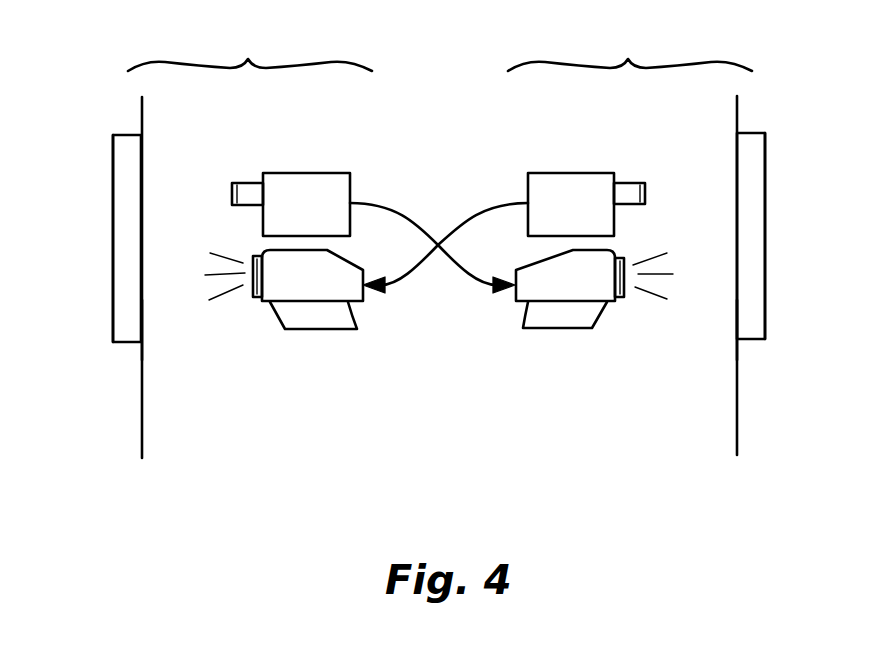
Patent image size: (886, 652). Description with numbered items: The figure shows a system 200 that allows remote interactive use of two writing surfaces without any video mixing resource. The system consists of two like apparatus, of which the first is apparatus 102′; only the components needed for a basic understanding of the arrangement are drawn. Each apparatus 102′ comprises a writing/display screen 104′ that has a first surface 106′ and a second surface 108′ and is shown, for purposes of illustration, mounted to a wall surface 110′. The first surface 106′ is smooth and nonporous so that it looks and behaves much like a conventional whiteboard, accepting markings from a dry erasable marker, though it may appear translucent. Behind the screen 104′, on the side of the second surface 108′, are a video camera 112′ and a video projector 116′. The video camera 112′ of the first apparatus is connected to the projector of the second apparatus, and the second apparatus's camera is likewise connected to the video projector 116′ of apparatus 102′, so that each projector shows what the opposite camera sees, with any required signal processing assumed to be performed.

The apparatus 102′ is at (250, 49).
The writing/display screen 104′ is at (126, 134).
The first surface 106′ is at (113, 275).
The second surface 108′ is at (143, 312).
The wall surface 110′ is at (143, 418).
The video camera 112′ is at (309, 173).
The video projector 116′ is at (322, 330).
The system 200 is at (287, 462).